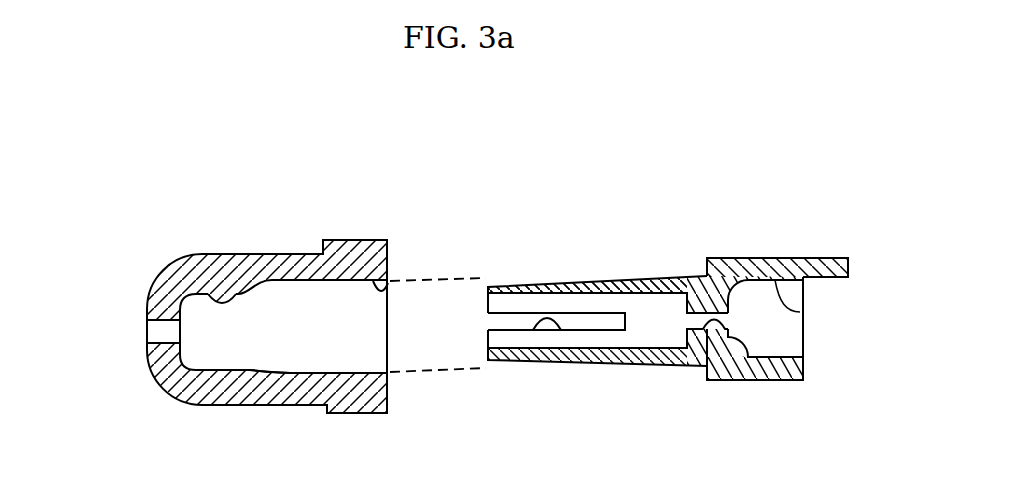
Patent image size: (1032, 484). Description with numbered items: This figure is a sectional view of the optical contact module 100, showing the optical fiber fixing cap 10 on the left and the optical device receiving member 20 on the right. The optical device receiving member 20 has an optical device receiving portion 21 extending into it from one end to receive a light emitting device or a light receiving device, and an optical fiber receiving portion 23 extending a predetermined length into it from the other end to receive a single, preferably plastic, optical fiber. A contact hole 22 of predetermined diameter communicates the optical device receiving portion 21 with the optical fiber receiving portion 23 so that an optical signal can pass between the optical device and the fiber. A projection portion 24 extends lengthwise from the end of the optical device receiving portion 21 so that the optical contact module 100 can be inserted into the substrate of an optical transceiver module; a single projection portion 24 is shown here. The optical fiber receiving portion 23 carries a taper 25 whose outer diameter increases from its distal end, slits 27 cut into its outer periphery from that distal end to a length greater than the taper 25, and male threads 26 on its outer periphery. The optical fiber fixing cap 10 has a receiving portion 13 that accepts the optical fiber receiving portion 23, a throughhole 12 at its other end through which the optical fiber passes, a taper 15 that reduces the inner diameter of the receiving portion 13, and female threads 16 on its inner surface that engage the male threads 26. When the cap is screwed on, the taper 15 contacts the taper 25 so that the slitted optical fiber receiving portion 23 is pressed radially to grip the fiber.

The optical contact module 100 is at (509, 142).
The optical fiber fixing cap 10 is at (167, 246).
The throughhole 12 is at (160, 343).
The receiving portion 13 is at (343, 357).
The taper 15 is at (240, 292).
The female threads 16 is at (389, 286).
The optical device receiving member 20 is at (728, 235).
The optical device receiving portion 21 is at (800, 312).
The contact hole 22 is at (703, 330).
The optical fiber receiving portion 23 is at (615, 341).
The projection portion 24 is at (837, 257).
The taper 25 is at (520, 277).
The male threads 26 is at (613, 277).
The slits 27 is at (546, 320).